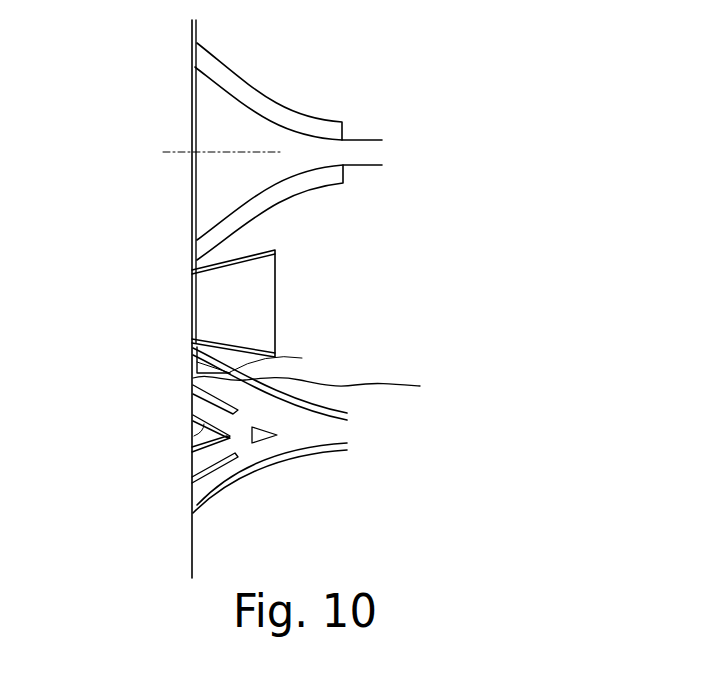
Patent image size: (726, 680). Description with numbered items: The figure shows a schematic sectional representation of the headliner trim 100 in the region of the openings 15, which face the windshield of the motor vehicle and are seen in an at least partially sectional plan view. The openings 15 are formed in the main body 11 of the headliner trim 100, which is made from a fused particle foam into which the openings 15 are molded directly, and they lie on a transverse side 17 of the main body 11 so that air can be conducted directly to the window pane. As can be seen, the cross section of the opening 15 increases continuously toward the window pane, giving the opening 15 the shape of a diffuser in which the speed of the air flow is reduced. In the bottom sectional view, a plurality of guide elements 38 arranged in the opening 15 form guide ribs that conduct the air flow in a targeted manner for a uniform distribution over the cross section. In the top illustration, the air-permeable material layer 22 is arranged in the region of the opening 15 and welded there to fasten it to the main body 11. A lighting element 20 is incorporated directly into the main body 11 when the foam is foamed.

The headliner trim 100 is at (444, 175).
The air-permeable material layer 22 is at (273, 113).
The opening 15 is at (223, 138).
The transverse side 17 is at (195, 217).
The lighting element 20 is at (227, 288).
The main body 11 is at (193, 362).
The guide element 38 is at (192, 435).